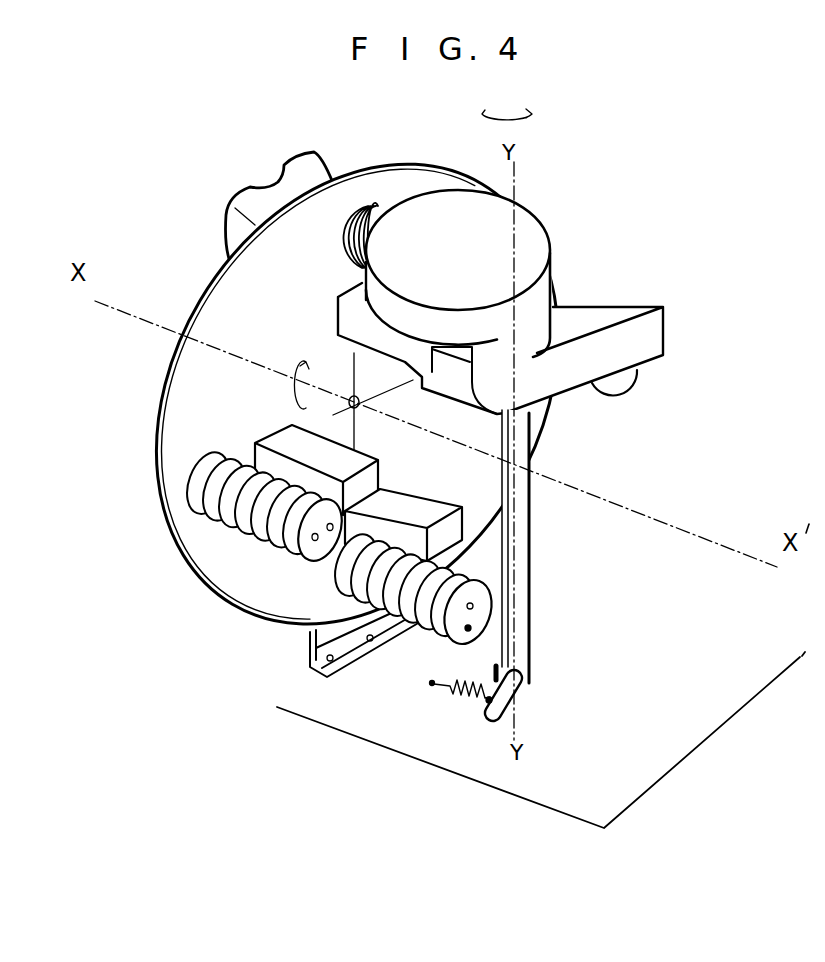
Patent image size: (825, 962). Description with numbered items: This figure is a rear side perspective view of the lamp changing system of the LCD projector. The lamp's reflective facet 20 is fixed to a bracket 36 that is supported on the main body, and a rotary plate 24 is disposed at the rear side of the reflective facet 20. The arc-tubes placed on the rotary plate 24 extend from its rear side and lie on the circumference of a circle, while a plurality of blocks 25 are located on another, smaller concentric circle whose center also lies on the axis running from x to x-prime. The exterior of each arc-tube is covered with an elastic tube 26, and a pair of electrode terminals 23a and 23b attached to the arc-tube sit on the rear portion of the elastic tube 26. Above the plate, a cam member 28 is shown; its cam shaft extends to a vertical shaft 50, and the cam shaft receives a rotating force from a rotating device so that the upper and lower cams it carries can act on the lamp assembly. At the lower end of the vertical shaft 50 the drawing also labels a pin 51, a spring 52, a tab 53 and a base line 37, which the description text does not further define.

The reflective facet 20 is at (310, 164).
The rotary plate 24 is at (270, 597).
The block 25 is at (455, 538).
The elastic tube 26 is at (377, 205).
The cam member 28 is at (545, 226).
The vertical shaft 50 is at (520, 590).
The electrode terminal 23a is at (474, 607).
The electrode terminal 23b is at (470, 628).
The pin 51 is at (512, 680).
The spring 52 is at (452, 700).
The tab 53 is at (485, 717).
The bracket 36 is at (307, 658).
The base plate 37 is at (565, 792).